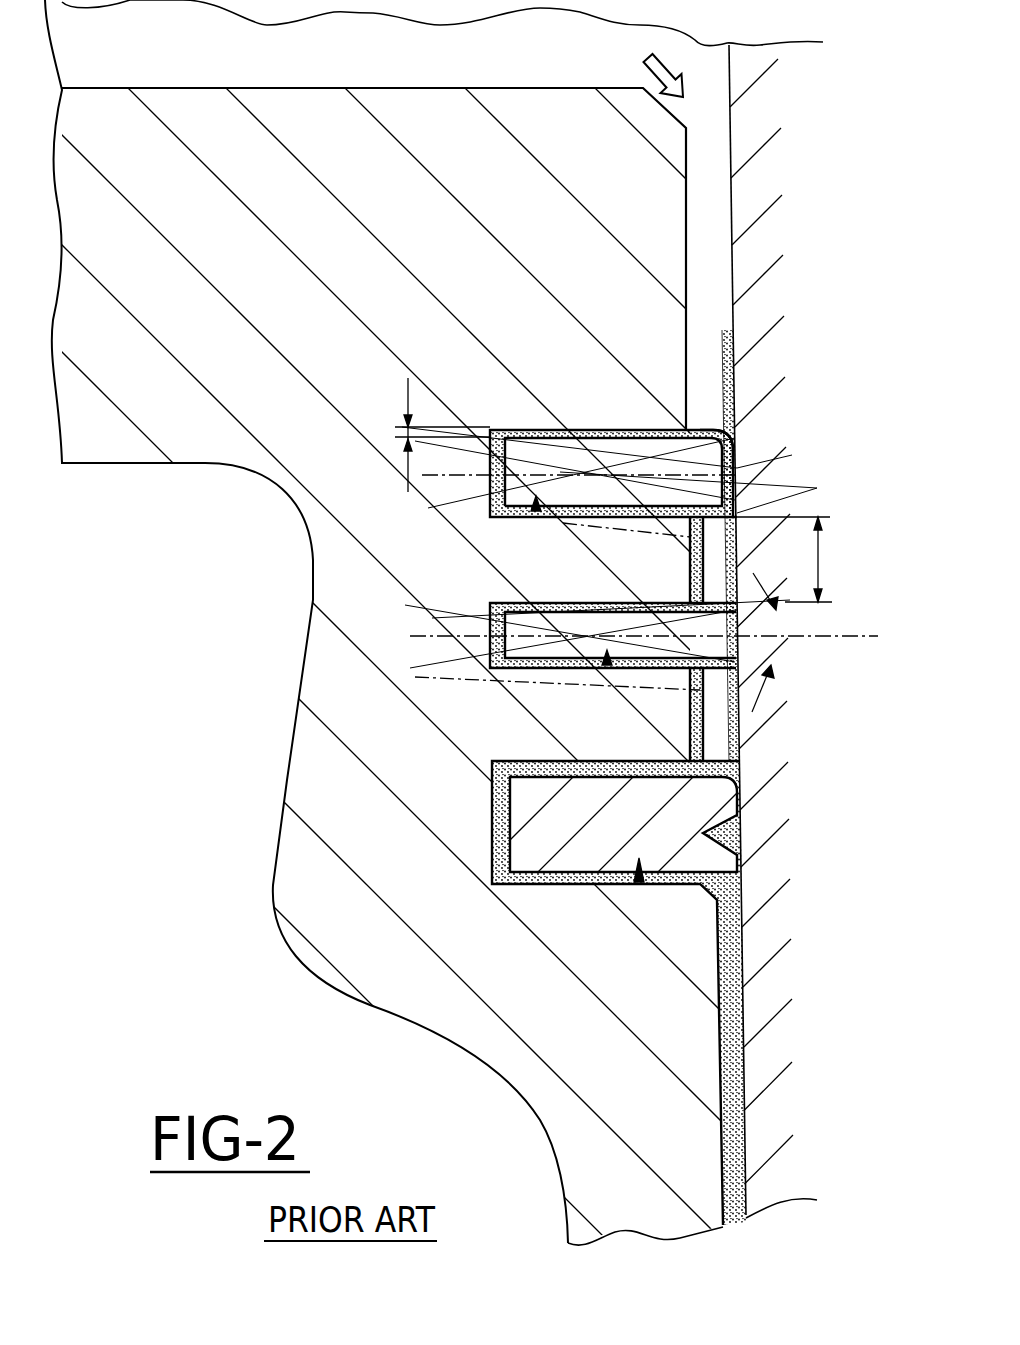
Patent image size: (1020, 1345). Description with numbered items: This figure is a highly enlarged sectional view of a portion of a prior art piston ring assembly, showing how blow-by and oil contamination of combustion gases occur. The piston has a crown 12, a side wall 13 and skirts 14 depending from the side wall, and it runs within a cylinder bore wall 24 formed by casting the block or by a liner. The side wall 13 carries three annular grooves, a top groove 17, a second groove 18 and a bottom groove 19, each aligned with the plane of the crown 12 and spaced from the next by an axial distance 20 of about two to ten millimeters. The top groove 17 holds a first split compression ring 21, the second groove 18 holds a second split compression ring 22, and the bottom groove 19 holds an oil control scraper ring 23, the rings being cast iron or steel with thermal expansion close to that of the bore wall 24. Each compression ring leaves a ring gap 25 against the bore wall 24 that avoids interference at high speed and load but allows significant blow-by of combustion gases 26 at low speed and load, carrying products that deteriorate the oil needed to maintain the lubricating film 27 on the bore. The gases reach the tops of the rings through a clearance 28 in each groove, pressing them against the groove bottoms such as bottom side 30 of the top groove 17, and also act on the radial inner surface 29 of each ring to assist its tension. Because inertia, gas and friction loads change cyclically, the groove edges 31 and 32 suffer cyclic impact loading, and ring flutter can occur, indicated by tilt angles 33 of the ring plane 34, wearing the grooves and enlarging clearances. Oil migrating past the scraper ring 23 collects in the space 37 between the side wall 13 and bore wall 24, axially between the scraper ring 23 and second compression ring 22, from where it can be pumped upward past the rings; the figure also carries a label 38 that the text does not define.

The crown 12 is at (510, 630).
The side wall 13 is at (731, 200).
The skirts 14 is at (723, 1145).
The top groove 17 is at (535, 510).
The second groove 18 is at (600, 667).
The bottom groove 19 is at (630, 878).
The distance 20 is at (822, 559).
The first split compression ring 21 is at (568, 440).
The second split compression ring 22 is at (570, 638).
The oil control scraper ring 23 is at (590, 805).
The bore wall 24 is at (712, 293).
The ring gap 25 is at (612, 450).
The combustion gases 26 is at (633, 68).
The lubricating film 27 is at (702, 491).
The clearance 28 is at (408, 392).
The radial inner surface 29 is at (490, 487).
The bottom side 30 is at (655, 488).
The groove edge 31 is at (690, 437).
The groove edge 32 is at (672, 512).
The tilt angles 33 is at (755, 700).
The ring plane 34 is at (848, 637).
The space 37 is at (712, 745).
The upper web 38 is at (693, 720).